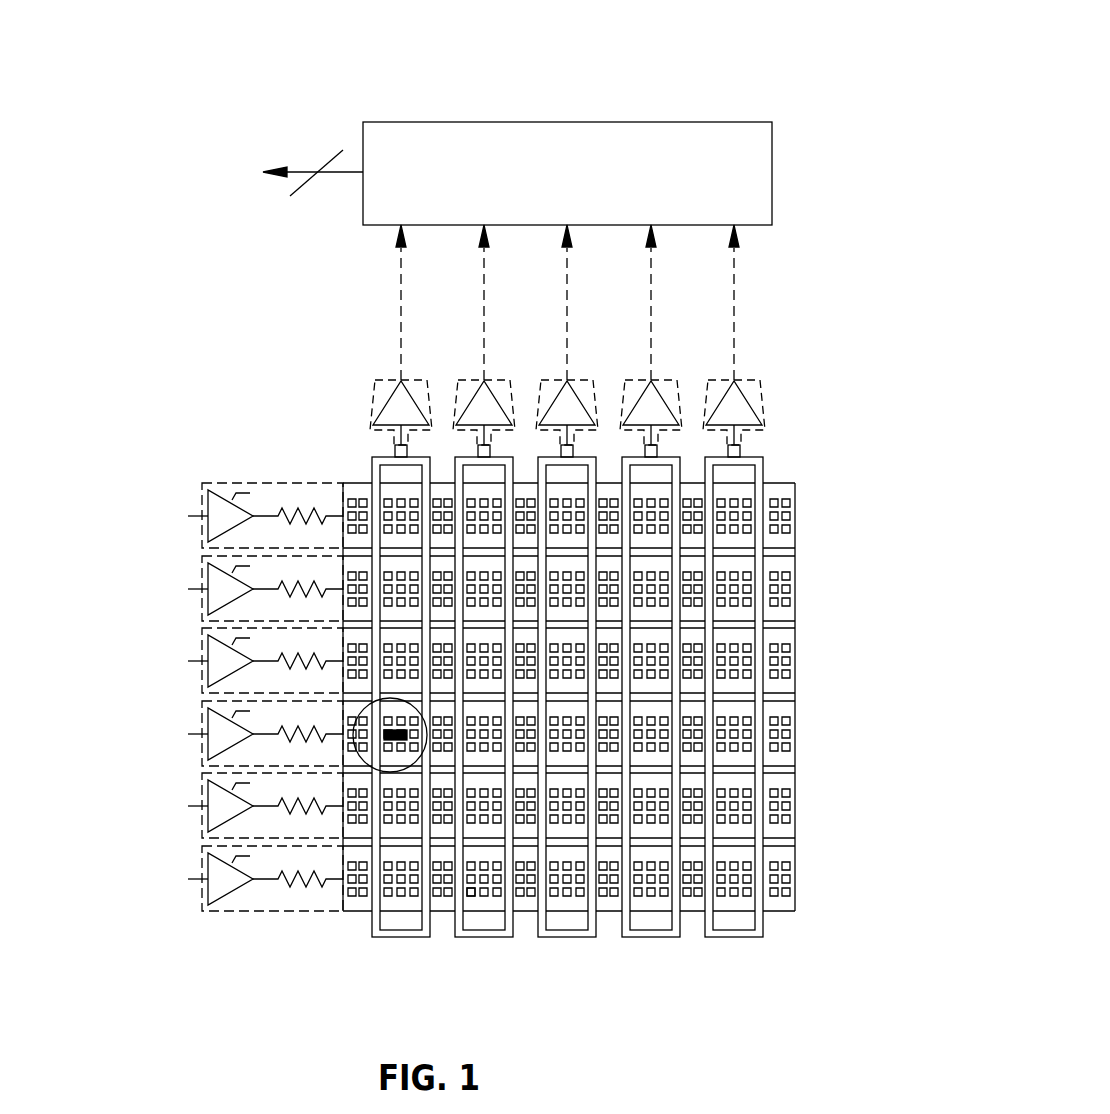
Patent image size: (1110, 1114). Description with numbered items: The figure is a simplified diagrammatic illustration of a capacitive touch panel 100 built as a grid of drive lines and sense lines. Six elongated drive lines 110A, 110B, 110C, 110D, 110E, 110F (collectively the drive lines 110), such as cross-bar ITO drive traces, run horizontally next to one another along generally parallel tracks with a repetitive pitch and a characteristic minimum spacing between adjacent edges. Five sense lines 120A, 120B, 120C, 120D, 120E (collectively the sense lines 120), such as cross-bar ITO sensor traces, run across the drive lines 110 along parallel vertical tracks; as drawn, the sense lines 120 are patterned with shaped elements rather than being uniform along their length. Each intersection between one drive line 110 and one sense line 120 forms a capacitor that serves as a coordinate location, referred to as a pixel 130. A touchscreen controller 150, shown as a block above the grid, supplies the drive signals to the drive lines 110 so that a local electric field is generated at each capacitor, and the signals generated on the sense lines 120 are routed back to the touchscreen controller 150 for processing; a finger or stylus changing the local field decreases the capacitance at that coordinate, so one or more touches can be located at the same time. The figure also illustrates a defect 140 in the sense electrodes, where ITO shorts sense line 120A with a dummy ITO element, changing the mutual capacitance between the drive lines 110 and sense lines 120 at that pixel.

The touch panel 100 is at (702, 63).
The drive lines 110 is at (131, 919).
The drive line 110A is at (202, 495).
The drive line 110B is at (202, 568).
The drive line 110C is at (202, 640).
The drive line 110D is at (202, 713).
The drive line 110E is at (202, 785).
The drive line 110F is at (202, 858).
The sense lines 120 is at (785, 353).
The sense line 120A is at (383, 388).
The sense line 120B is at (466, 388).
The sense line 120C is at (549, 388).
The sense line 120D is at (633, 388).
The sense line 120E is at (716, 388).
The pixel 130 is at (475, 893).
The defect 140 is at (392, 772).
The touchscreen controller 150 is at (547, 186).